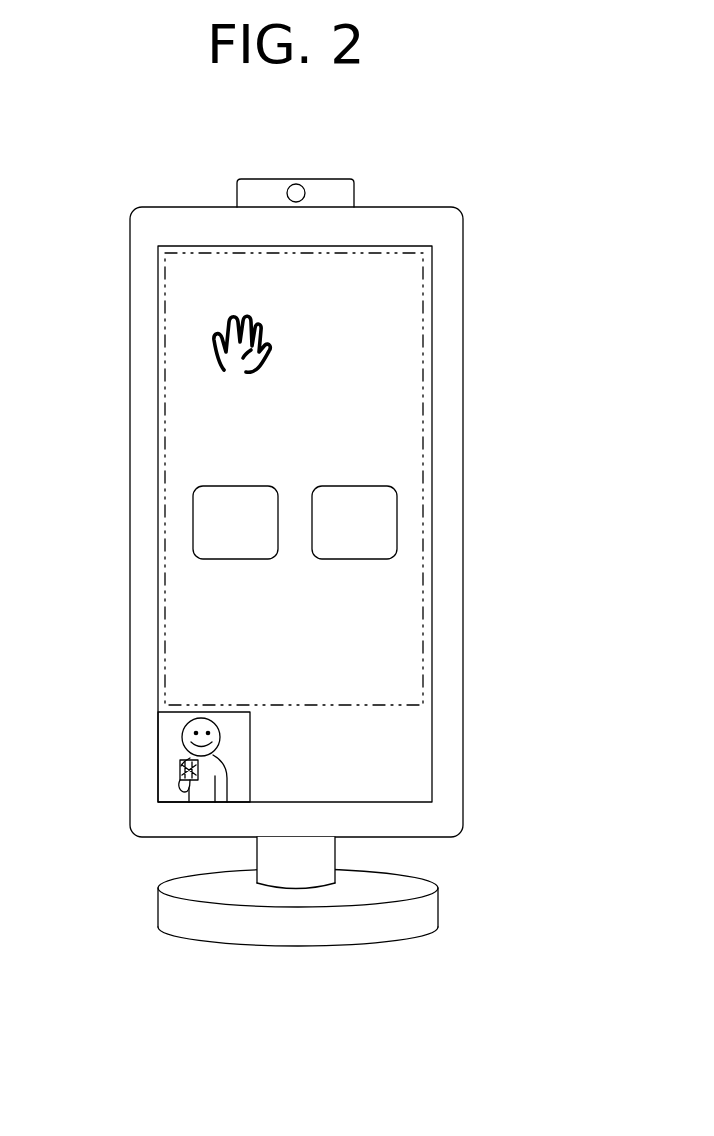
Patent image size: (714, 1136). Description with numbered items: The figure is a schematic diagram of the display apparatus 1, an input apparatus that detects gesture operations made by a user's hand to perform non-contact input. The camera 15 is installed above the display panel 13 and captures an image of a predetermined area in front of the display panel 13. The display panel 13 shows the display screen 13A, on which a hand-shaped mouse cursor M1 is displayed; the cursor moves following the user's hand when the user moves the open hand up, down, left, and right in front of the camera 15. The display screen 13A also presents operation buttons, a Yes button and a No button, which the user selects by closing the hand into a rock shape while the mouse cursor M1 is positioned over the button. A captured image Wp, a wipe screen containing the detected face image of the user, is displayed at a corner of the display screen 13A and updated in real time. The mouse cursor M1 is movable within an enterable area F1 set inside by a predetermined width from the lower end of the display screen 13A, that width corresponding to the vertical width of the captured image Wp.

The display apparatus 1 is at (487, 164).
The camera 15 is at (305, 171).
The display panel 13 is at (432, 318).
The display screen 13A is at (222, 288).
The enterable area F1 is at (366, 707).
The mouse cursor M1 is at (205, 349).
The captured image Wp is at (250, 760).